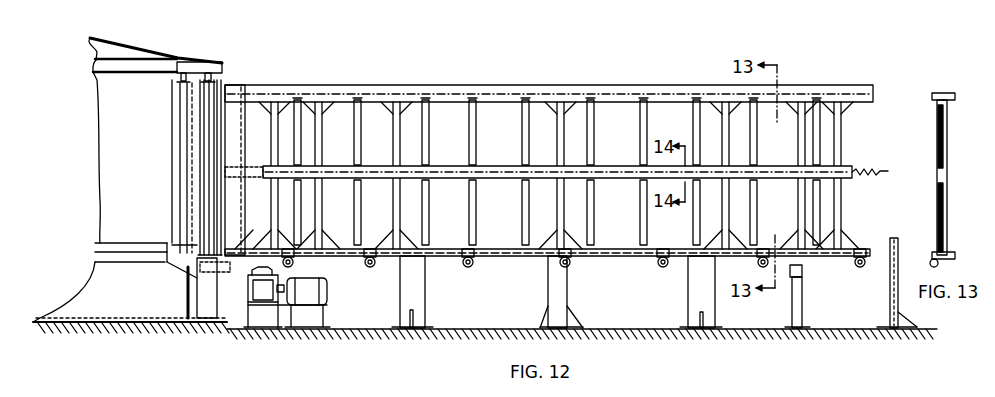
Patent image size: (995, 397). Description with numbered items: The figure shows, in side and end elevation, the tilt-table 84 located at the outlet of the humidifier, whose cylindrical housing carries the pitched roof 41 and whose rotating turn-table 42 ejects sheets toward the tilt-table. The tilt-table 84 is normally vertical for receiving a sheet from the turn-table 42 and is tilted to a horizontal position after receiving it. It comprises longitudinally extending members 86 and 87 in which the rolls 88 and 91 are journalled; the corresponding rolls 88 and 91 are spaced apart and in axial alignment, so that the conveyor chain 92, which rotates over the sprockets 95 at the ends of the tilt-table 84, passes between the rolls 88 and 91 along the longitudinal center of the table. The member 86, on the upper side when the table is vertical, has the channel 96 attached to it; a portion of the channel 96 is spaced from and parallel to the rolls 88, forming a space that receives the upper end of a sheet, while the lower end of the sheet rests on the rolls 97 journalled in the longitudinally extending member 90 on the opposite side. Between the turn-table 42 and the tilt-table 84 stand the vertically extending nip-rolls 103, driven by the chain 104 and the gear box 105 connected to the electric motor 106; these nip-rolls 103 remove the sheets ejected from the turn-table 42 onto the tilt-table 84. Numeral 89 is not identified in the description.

In FIG. 12, the pitched roof 41 is at (122, 43).
In FIG. 12, the turn-table 42 is at (130, 191).
In FIG. 12, the tilt-table 84 is at (450, 122).
In FIG. 12, the longitudinally extending member 86 is at (622, 95).
In FIG. 12, the longitudinally extending member 87 is at (608, 248).
In FIG. 13, the longitudinally extending member 87 is at (937, 212).
In FIG. 12, the rolls 88 is at (521, 147).
In FIG. 13, the rolls 88 is at (937, 120).
In FIG. 12, the intermediate beam 89 is at (515, 178).
In FIG. 12, the longitudinally extending member 90 is at (507, 247).
In FIG. 12, the rolls 91 is at (467, 207).
In FIG. 12, the conveyor chain 92 is at (887, 175).
In FIG. 12, the sprockets 95 is at (238, 167).
In FIG. 13, the channel 96 is at (932, 95).
In FIG. 12, the rolls 97 is at (471, 265).
In FIG. 13, the rolls 97 is at (940, 265).
In FIG. 12, the nip-rolls 103 is at (218, 83).
In FIG. 12, the chain 104 is at (225, 263).
In FIG. 12, the gear box 105 is at (270, 280).
In FIG. 12, the electric motor 106 is at (330, 288).